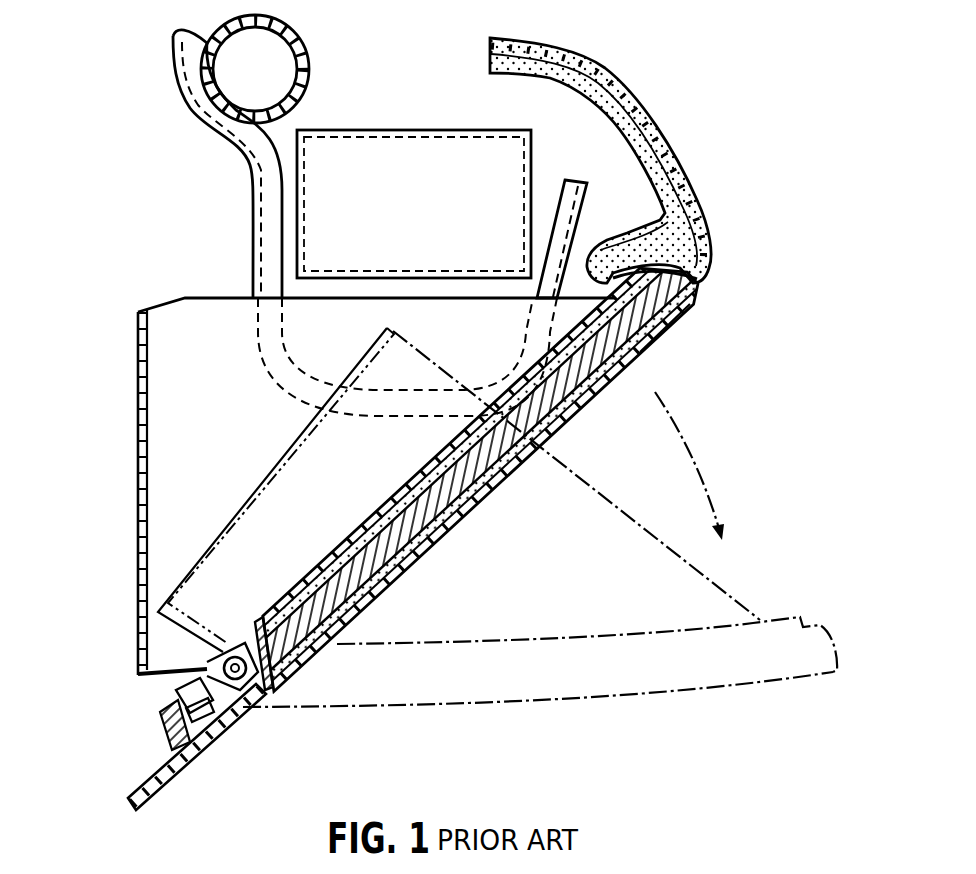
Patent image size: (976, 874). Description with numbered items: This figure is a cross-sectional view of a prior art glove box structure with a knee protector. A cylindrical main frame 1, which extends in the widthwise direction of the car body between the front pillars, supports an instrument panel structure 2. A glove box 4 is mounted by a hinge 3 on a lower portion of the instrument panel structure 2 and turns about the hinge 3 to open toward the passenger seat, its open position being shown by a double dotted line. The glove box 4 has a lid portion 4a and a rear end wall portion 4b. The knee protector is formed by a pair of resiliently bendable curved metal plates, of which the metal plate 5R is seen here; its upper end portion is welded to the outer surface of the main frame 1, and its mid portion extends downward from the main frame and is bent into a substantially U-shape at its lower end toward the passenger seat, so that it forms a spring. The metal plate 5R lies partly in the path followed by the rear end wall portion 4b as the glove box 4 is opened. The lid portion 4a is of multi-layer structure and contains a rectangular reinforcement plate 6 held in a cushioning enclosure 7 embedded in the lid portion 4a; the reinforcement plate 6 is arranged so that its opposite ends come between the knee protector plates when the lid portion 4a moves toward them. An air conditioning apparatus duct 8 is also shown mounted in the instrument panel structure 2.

The main frame 1 is at (307, 61).
The instrument panel structure 2 is at (648, 100).
The hinge 3 is at (236, 657).
The glove box 4 is at (215, 471).
The lid portion 4a is at (498, 486).
The rear end wall portion 4b is at (135, 453).
The metal plate 5R is at (253, 202).
The reinforcement plate 6 is at (430, 548).
The cushioning enclosure 7 is at (660, 337).
The air conditioning apparatus duct 8 is at (432, 221).